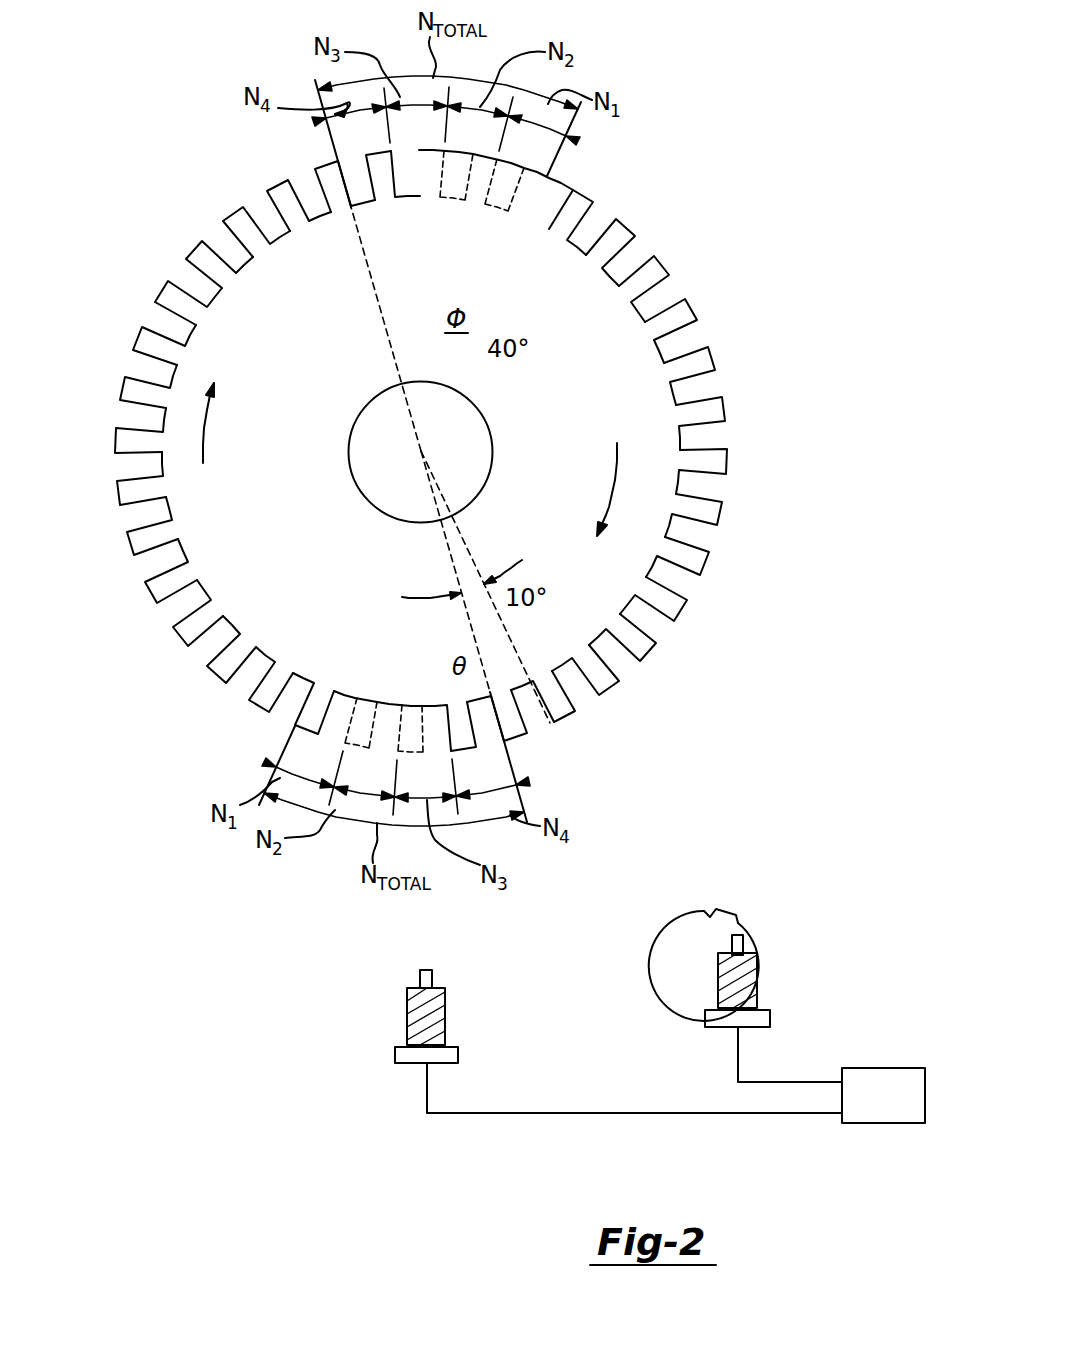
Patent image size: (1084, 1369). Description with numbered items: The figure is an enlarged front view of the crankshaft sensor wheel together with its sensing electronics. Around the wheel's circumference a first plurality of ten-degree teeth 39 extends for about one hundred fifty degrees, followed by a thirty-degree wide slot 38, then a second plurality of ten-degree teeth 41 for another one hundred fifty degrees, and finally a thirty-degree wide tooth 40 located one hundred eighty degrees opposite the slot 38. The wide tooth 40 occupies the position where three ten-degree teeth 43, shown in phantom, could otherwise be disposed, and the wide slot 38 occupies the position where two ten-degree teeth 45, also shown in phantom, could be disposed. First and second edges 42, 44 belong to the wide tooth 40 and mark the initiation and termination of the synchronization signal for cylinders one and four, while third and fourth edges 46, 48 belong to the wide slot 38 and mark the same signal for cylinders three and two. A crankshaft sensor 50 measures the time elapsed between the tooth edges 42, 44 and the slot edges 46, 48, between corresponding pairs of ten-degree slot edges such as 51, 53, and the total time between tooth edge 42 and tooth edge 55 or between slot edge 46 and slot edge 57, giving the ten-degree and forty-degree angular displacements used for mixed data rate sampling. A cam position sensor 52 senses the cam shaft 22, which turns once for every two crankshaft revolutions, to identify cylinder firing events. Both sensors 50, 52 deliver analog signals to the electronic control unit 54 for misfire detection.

The cam shaft 22 is at (775, 853).
The wide slot 38 is at (380, 751).
The 10° teeth 39 is at (712, 412).
The wide tooth 40 is at (513, 160).
The second plurality of 10° teeth 41 is at (117, 420).
The first edge 42 is at (547, 173).
The phantom 10° teeth 43 is at (473, 198).
The second edge 44 is at (385, 146).
The phantom 10° teeth 45 is at (365, 710).
The third edge 46 is at (293, 732).
The fourth edge 48 is at (455, 758).
The crankshaft sensor 50 is at (393, 1053).
The 10° slot edge 51 is at (697, 577).
The cam position sensor 52 is at (770, 1017).
The 10° slot edge 53 is at (715, 527).
The electronic control unit 54 is at (915, 1078).
The tooth edge 55 is at (334, 156).
The slot edge 57 is at (505, 746).